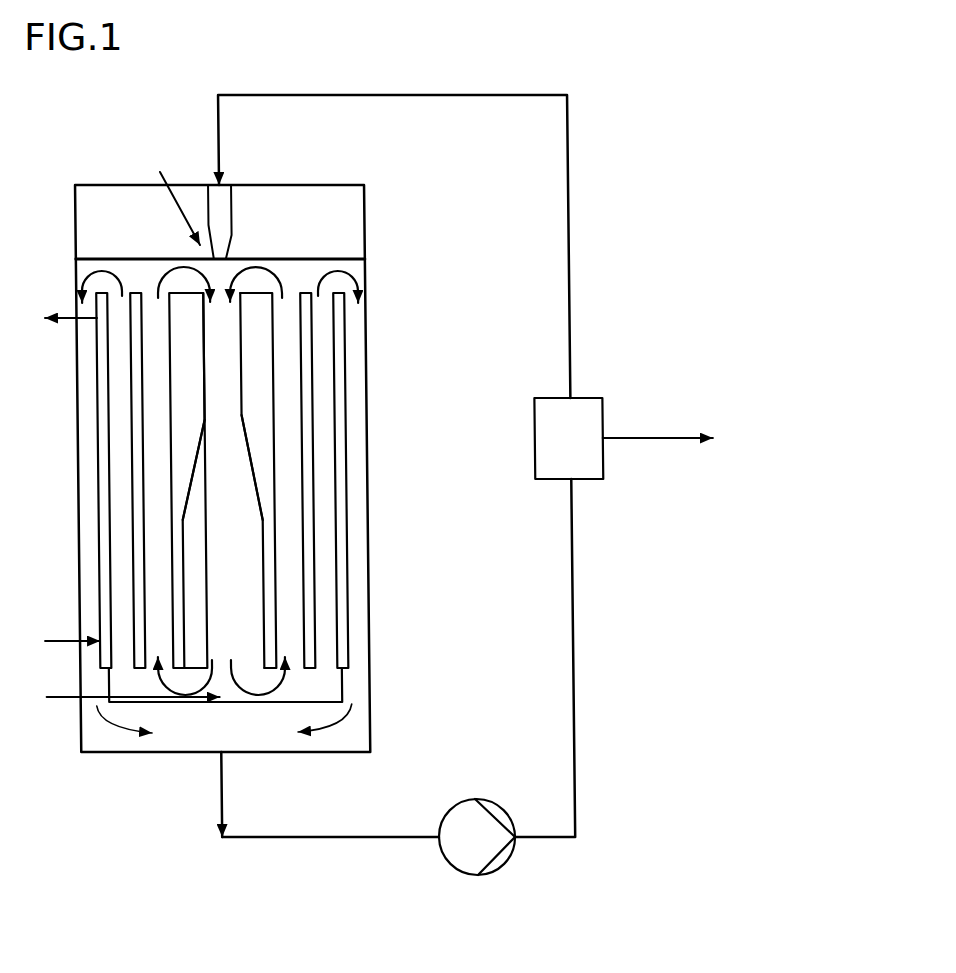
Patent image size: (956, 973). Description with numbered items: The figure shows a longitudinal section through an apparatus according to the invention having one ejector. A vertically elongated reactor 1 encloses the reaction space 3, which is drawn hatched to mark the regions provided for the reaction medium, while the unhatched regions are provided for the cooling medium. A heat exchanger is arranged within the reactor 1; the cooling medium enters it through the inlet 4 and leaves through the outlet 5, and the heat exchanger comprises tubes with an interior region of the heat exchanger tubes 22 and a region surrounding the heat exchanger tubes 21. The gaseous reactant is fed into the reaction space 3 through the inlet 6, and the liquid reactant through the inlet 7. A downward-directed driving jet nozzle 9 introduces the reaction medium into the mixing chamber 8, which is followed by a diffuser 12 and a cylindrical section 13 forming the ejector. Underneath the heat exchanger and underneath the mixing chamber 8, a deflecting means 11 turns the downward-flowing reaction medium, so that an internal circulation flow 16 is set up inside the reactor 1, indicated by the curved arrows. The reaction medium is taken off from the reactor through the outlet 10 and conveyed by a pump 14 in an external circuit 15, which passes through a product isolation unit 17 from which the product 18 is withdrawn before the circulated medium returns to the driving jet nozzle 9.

The vertically elongated reactor 1 is at (73, 222).
The reaction space 3 is at (311, 268).
The inlet for introducing the cooling medium 4 is at (65, 638).
The outlet for taking off the cooling medium 5 is at (46, 325).
The inlet for introducing the gaseous reactant 6 is at (125, 697).
The inlet for introducing the liquid reactant 7 is at (175, 194).
The mixing chamber 8 is at (238, 342).
The downward-directed driving jet nozzle 9 is at (230, 202).
The outlet for taking off the reaction medium 10 is at (213, 812).
The means for deflecting the reaction medium 11 is at (299, 702).
The diffuser 12 is at (248, 468).
The cylindrical section 13 is at (261, 580).
The pump 14 is at (486, 802).
The external circuit 15 is at (568, 140).
The internal circulation flow 16 is at (154, 278).
The product isolation unit 17 is at (584, 398).
The product 18 is at (645, 437).
The region surrounding the heat exchanger tubes 21 is at (131, 383).
The interior region of the heat exchanger tubes 22 is at (117, 427).